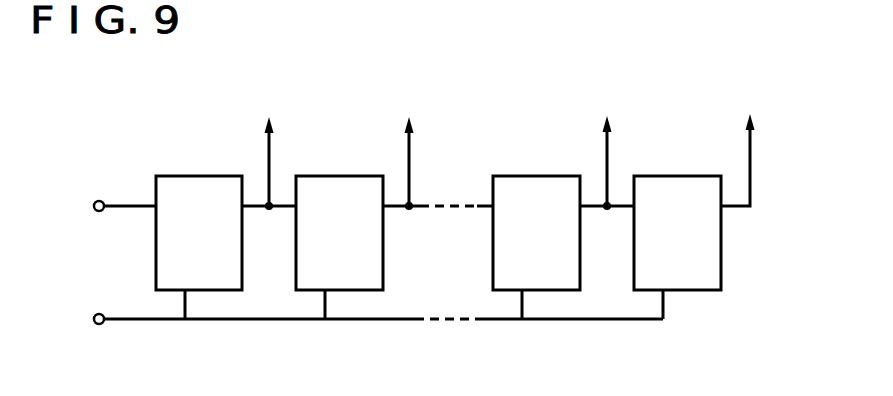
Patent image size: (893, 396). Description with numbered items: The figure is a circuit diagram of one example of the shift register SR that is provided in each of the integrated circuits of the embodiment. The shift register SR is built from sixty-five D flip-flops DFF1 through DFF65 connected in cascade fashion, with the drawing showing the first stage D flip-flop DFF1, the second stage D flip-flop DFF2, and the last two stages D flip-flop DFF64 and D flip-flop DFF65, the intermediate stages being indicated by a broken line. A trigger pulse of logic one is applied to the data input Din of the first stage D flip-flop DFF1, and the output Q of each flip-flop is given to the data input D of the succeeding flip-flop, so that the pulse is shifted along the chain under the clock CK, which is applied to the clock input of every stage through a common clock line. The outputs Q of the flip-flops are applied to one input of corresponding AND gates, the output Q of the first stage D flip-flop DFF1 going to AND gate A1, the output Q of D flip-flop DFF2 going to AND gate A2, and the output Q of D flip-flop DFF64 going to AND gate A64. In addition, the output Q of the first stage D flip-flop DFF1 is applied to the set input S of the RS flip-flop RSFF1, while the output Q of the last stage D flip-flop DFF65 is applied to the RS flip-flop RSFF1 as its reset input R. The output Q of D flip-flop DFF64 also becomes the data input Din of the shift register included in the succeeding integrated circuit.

The shift register SR is at (201, 162).
The first stage D flip-flop DFF1 is at (199, 235).
The D flip-flop DFF2 is at (339, 235).
The D flip-flop DFF64 is at (536, 235).
The last stage D flip-flop DFF65 is at (677, 235).
The data input Din is at (99, 206).
The clock CK is at (352, 311).
The AND gate A1 is at (270, 147).
The AND gate A2 is at (410, 147).
The AND gate A64 is at (608, 147).
The RS flip-flop RSFF1 is at (761, 145).